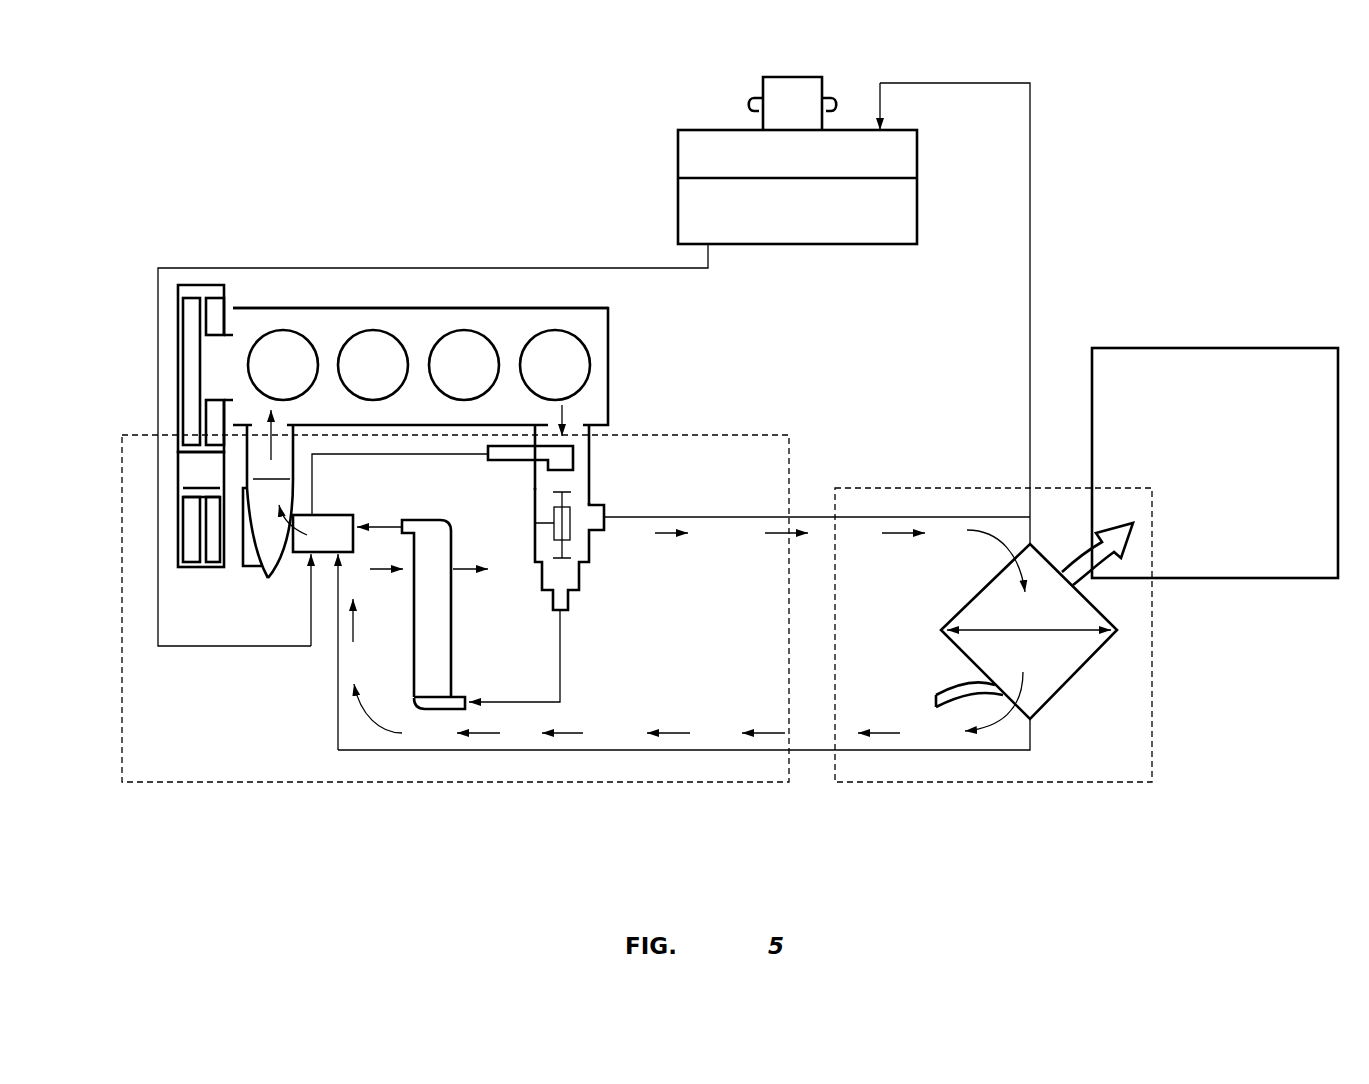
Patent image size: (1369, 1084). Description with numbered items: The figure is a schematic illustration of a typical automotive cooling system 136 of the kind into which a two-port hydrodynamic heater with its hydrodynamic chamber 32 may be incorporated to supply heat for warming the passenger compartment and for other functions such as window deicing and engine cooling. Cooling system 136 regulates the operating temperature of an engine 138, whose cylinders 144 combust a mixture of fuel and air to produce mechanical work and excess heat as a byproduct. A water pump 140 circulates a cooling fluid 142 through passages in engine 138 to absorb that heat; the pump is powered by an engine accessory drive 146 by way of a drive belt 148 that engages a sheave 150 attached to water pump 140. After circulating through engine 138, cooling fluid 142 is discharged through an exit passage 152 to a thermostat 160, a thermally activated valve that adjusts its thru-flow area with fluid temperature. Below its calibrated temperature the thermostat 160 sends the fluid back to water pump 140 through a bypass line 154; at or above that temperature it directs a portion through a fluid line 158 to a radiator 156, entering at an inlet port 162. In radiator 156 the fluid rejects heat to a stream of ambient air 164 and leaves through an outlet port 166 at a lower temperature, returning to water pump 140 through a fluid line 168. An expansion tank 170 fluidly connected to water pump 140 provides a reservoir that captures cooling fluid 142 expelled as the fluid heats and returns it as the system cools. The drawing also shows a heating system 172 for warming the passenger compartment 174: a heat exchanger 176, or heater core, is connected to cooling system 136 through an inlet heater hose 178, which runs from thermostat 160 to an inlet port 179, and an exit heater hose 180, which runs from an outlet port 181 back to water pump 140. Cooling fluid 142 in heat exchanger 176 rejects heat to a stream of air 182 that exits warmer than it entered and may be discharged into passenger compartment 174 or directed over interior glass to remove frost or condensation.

The hydrodynamic chamber 32 is at (608, 335).
The cooling system 136 is at (283, 782).
The engine 138 is at (365, 308).
The water pump 140 is at (268, 577).
The cooling fluid 142 is at (822, 225).
The cylinders 144 is at (532, 332).
The engine accessory drive 146 is at (200, 368).
The drive belt 148 is at (178, 470).
The sheave 150 is at (183, 570).
The exit passage 152 is at (580, 430).
The bypass line 154 is at (383, 455).
The radiator 156 is at (437, 705).
The fluid line 158 is at (560, 655).
The thermostat 160 is at (605, 492).
The inlet port 162 is at (465, 700).
The stream of ambient air 164 is at (465, 567).
The outlet port 166 is at (401, 521).
The fluid line 168 is at (384, 524).
The expansion tank 170 is at (710, 128).
The heating system 172 is at (1068, 782).
The passenger compartment 174 is at (1200, 348).
The heat exchanger 176 is at (1078, 676).
The inlet heater hose 178 is at (810, 517).
The inlet port 179 is at (1032, 543).
The exit heater hose 180 is at (797, 750).
The outlet port 181 is at (1035, 725).
The stream of air 182 is at (1112, 552).